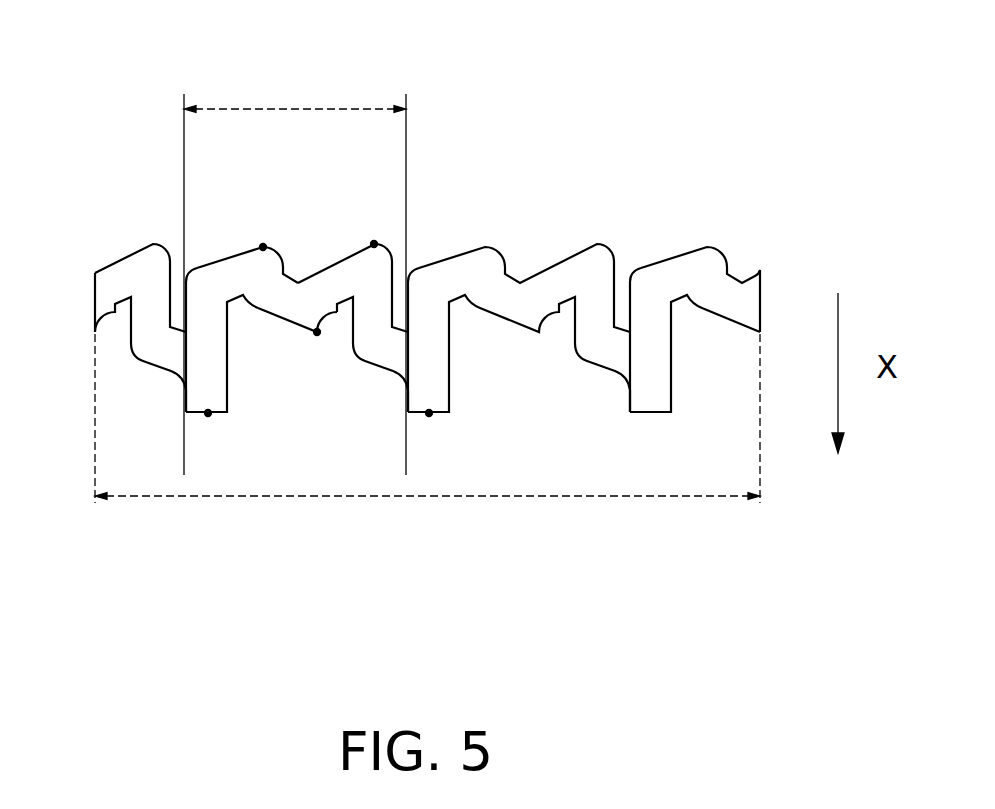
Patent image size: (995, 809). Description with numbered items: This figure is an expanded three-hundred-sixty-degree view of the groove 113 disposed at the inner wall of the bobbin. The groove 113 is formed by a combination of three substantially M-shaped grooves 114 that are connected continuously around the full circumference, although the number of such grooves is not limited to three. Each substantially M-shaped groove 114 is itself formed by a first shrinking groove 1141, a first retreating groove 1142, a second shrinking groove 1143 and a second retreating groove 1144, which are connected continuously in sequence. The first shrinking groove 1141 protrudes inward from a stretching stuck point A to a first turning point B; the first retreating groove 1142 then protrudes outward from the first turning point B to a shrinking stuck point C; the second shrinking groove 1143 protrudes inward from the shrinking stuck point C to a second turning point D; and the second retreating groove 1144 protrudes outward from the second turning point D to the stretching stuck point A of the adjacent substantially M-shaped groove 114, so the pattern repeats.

The groove 113 is at (87, 55).
The substantially M-shaped groove 114 is at (295, 274).
The first shrinking groove 1141 is at (212, 323).
The first retreating groove 1142 is at (278, 298).
The second shrinking groove 1143 is at (342, 282).
The second retreating groove 1144 is at (378, 337).